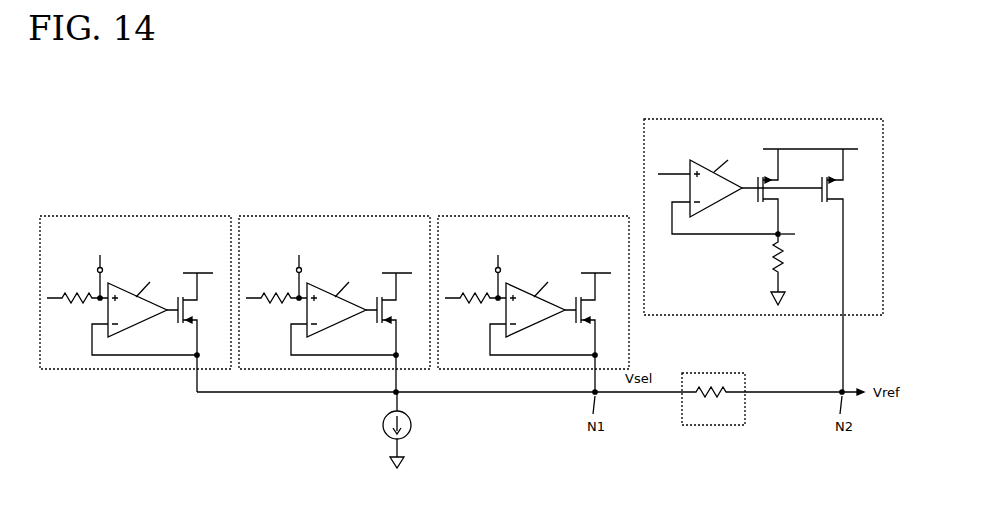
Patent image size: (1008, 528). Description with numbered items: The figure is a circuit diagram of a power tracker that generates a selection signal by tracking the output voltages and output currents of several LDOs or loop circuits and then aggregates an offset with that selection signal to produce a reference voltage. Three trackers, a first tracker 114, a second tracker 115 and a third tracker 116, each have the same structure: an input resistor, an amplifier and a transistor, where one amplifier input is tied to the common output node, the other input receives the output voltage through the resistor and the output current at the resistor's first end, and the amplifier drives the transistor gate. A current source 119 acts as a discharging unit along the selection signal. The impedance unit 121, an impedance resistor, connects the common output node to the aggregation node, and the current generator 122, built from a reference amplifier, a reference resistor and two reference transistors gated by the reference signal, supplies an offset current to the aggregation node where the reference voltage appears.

The first tracker 114 is at (209, 215).
The second tracker 115 is at (408, 215).
The third tracker 116 is at (606, 215).
The current source 119 is at (411, 424).
The impedance unit 121 is at (733, 373).
The current generator 122 is at (855, 119).